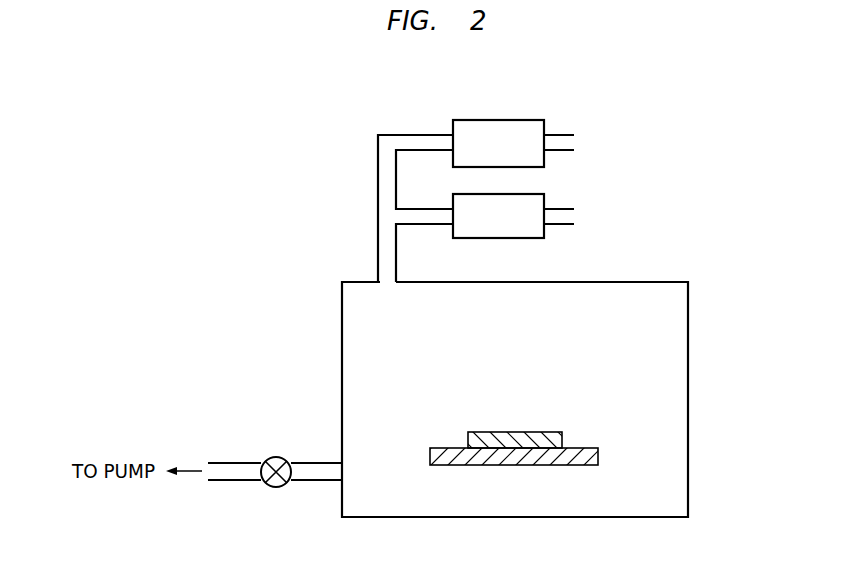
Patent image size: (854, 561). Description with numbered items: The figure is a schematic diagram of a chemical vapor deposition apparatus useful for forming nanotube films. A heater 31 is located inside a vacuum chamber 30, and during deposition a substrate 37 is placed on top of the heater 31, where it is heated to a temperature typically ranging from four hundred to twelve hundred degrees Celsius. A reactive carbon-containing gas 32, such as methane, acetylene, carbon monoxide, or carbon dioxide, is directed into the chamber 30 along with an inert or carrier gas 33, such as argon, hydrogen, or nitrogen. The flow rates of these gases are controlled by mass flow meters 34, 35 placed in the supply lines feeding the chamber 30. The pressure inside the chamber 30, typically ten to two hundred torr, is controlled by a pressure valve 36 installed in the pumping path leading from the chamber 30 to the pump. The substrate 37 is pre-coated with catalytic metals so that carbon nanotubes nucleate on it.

The vacuum chamber 30 is at (688, 292).
The heater 31 is at (598, 450).
The reactive carbon-containing gas 32 is at (582, 143).
The inert or carrier gas 33 is at (582, 218).
The mass flow meter 34 is at (544, 121).
The mass flow meter 35 is at (544, 195).
The pressure valve 36 is at (268, 486).
The substrate 37 is at (562, 433).